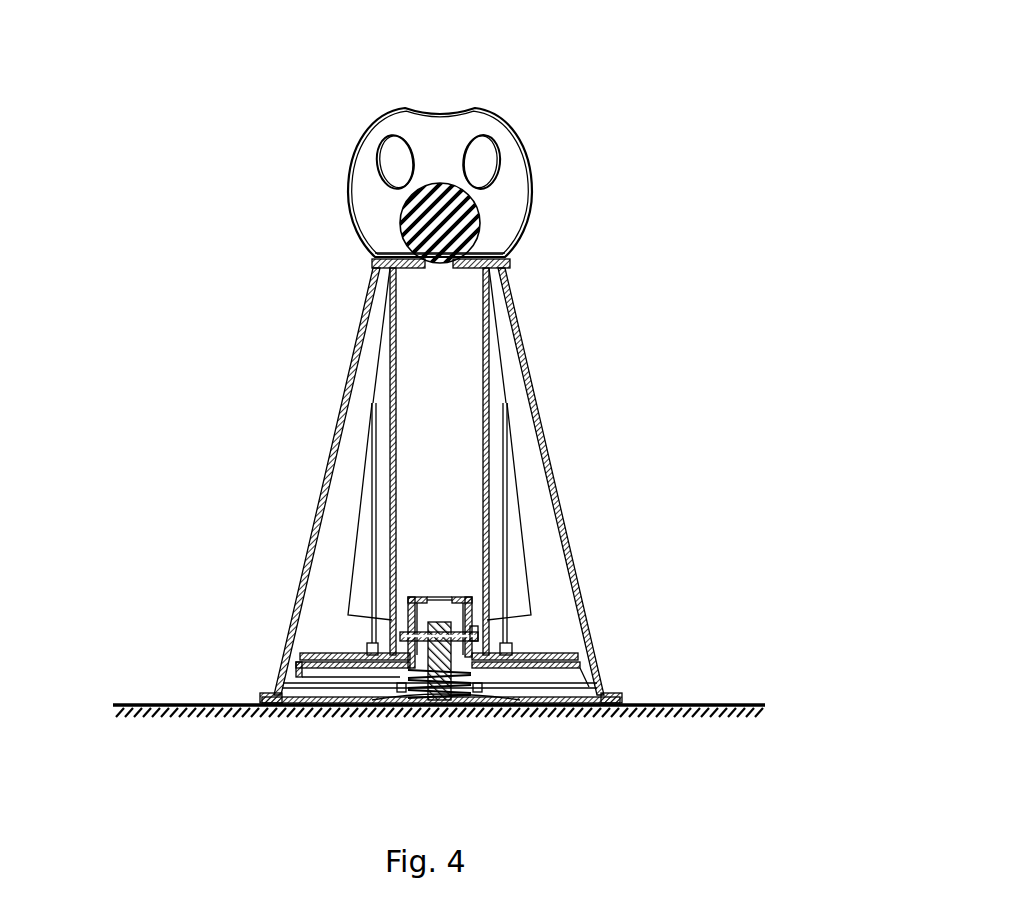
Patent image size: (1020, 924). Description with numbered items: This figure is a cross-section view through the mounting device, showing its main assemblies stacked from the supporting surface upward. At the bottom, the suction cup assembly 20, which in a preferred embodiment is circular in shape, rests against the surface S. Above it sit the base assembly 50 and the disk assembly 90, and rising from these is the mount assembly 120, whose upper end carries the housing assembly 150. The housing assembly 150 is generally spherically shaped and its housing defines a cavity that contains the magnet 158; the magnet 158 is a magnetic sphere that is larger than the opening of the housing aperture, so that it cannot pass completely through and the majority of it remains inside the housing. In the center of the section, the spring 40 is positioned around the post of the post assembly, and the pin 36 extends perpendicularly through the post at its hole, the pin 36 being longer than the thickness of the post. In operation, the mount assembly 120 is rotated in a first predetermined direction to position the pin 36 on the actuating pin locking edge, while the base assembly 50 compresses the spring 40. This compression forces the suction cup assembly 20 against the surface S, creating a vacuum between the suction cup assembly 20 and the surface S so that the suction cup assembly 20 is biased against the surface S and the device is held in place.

The housing assembly 150 is at (363, 137).
The magnet 158 is at (400, 210).
The mount assembly 120 is at (348, 363).
The pin 36 is at (480, 627).
The disk assembly 90 is at (557, 652).
The base assembly 50 is at (617, 692).
The surface S is at (692, 705).
The suction cup assembly 20 is at (262, 700).
The spring 40 is at (482, 686).